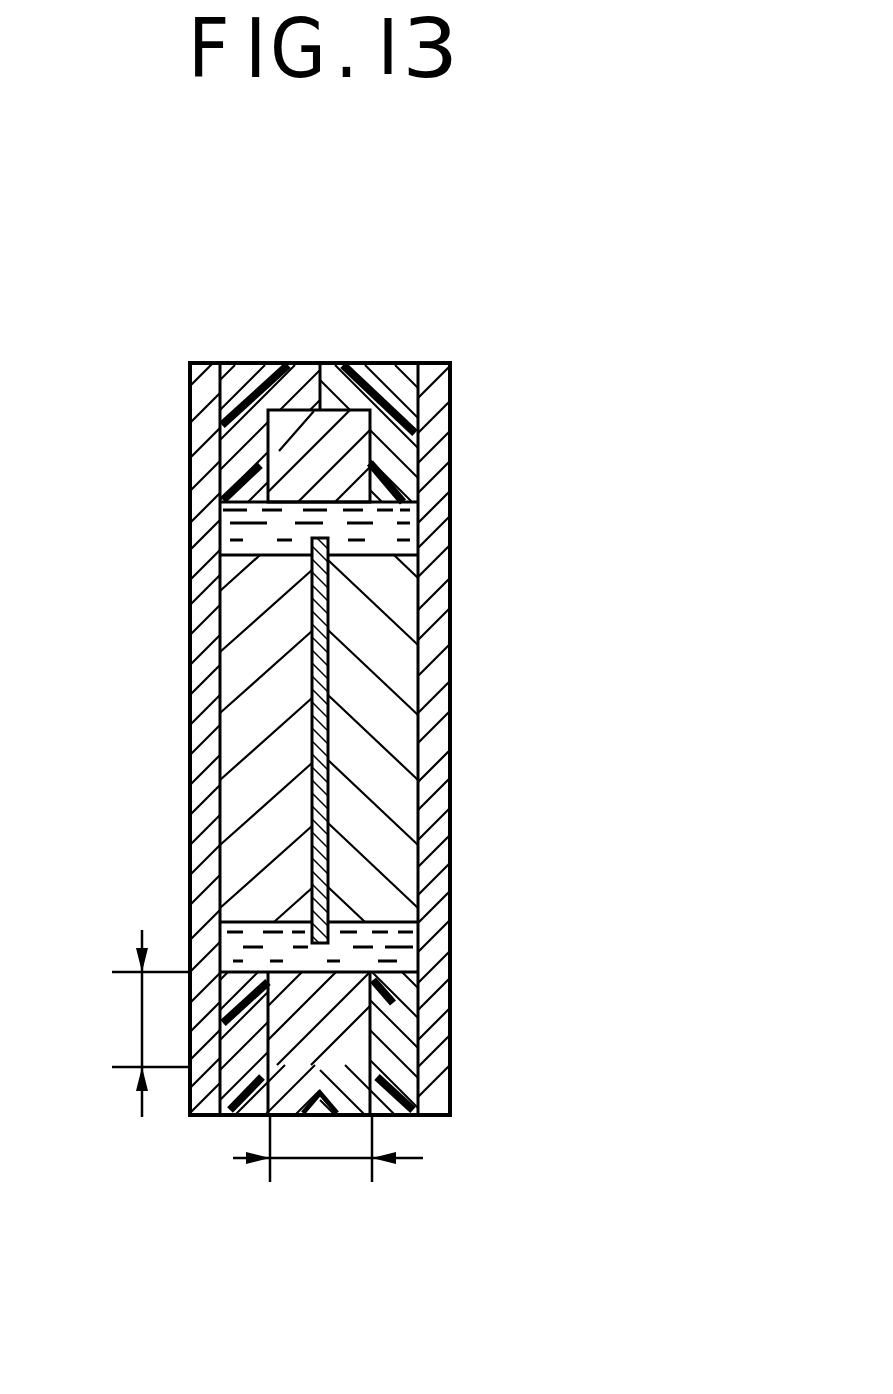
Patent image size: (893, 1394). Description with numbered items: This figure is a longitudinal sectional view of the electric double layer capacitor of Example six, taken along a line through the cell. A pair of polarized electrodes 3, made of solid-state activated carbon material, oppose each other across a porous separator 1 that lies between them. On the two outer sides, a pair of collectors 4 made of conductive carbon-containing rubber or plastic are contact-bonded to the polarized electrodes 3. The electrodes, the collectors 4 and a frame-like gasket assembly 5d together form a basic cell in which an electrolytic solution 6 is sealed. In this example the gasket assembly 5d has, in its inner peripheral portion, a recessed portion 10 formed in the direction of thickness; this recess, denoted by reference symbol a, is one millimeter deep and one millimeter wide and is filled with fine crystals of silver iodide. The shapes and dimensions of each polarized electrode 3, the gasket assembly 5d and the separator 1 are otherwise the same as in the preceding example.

The separator 1 is at (323, 662).
The polarized electrode 3 is at (393, 757).
The collector 4 is at (450, 397).
The gasket assembly 5d is at (383, 377).
The electrolytic solution 6 is at (417, 525).
The recessed portion 10 is at (290, 460).
The recessed portion dimension a is at (140, 1017).